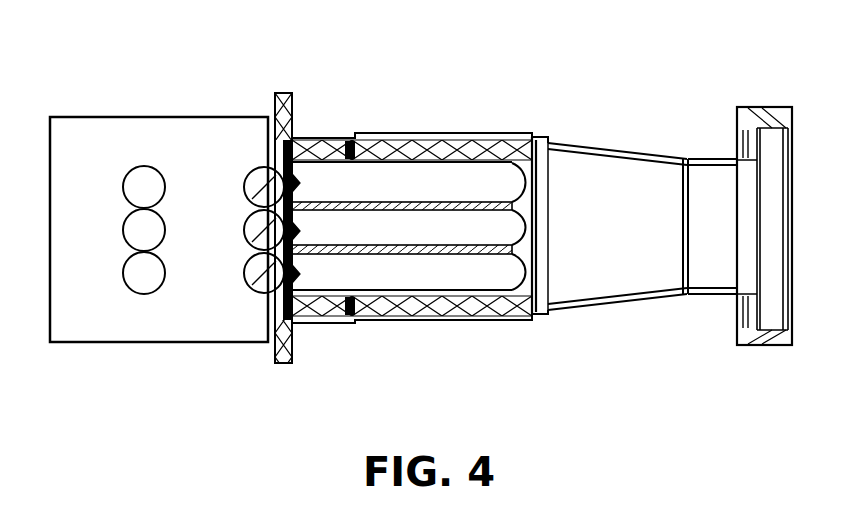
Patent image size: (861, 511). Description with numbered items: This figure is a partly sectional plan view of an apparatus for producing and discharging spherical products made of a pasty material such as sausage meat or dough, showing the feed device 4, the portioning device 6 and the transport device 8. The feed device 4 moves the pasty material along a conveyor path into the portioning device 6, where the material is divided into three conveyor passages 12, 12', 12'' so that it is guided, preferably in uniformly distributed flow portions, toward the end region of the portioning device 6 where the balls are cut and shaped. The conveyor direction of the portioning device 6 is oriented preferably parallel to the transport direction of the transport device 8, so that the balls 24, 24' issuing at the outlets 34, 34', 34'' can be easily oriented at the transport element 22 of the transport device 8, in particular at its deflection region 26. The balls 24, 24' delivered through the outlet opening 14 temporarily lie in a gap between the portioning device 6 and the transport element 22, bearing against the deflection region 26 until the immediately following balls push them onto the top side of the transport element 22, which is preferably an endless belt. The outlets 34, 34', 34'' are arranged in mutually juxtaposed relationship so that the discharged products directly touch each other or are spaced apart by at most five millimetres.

The feed device 4 is at (693, 325).
The portioning device 6 is at (390, 98).
The transport device 8 is at (156, 278).
The conveyor passage 12 is at (480, 289).
The conveyor passage 12' is at (402, 325).
The conveyor passage 12'' is at (417, 127).
The outlet opening 14 is at (250, 146).
The transport element 22 is at (82, 153).
The ball 24 is at (197, 317).
The ball 24' is at (243, 341).
The deflection region 26 is at (256, 105).
The outlet 34 is at (306, 352).
The outlet 34' is at (332, 141).
The outlet 34'' is at (309, 99).